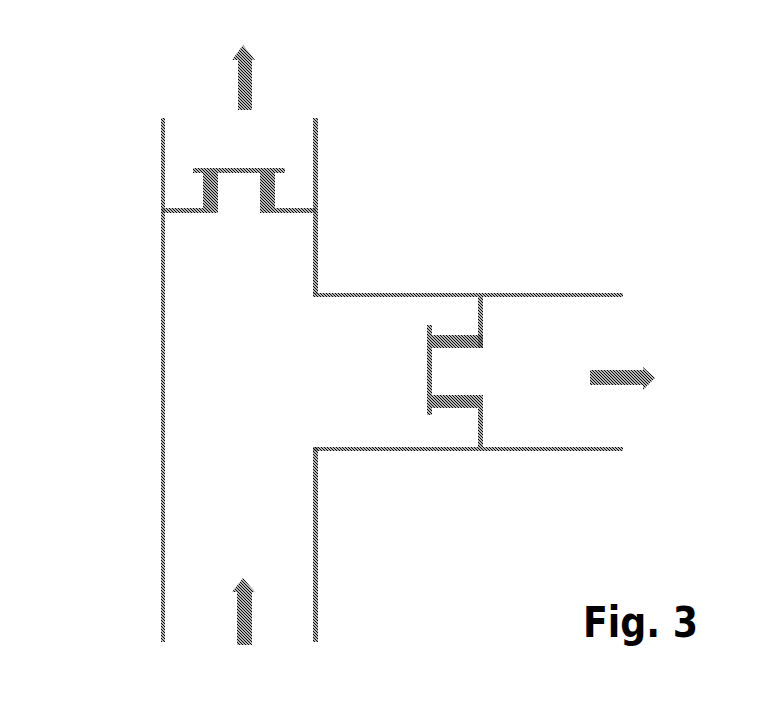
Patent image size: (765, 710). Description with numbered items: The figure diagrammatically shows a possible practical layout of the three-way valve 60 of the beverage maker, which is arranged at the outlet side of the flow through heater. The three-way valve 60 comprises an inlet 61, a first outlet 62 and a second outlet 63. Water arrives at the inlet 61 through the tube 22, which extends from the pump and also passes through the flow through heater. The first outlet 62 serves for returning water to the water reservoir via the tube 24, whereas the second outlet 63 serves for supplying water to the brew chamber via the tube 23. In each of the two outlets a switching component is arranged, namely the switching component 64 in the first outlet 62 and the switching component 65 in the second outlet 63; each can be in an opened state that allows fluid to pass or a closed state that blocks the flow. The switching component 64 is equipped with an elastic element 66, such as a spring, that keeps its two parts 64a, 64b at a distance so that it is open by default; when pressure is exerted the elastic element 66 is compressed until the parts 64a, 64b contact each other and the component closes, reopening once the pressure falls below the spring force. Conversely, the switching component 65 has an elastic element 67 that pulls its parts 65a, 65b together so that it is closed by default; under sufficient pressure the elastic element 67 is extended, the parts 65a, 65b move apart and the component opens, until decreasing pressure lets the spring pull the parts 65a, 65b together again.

The three-way valve 60 is at (602, 108).
The tube 22 is at (188, 567).
The tube 23 is at (177, 139).
The tube 24 is at (587, 312).
The inlet 61 is at (227, 455).
The first outlet 62 is at (474, 380).
The second outlet 63 is at (237, 297).
The switching component 64 is at (459, 341).
The part of switching component 64a is at (479, 416).
The part of switching component 64b is at (428, 382).
The switching component 65 is at (204, 164).
The part of switching component 65a is at (183, 210).
The part of switching component 65b is at (252, 167).
The elastic element 66 is at (453, 396).
The elastic element 67 is at (272, 190).